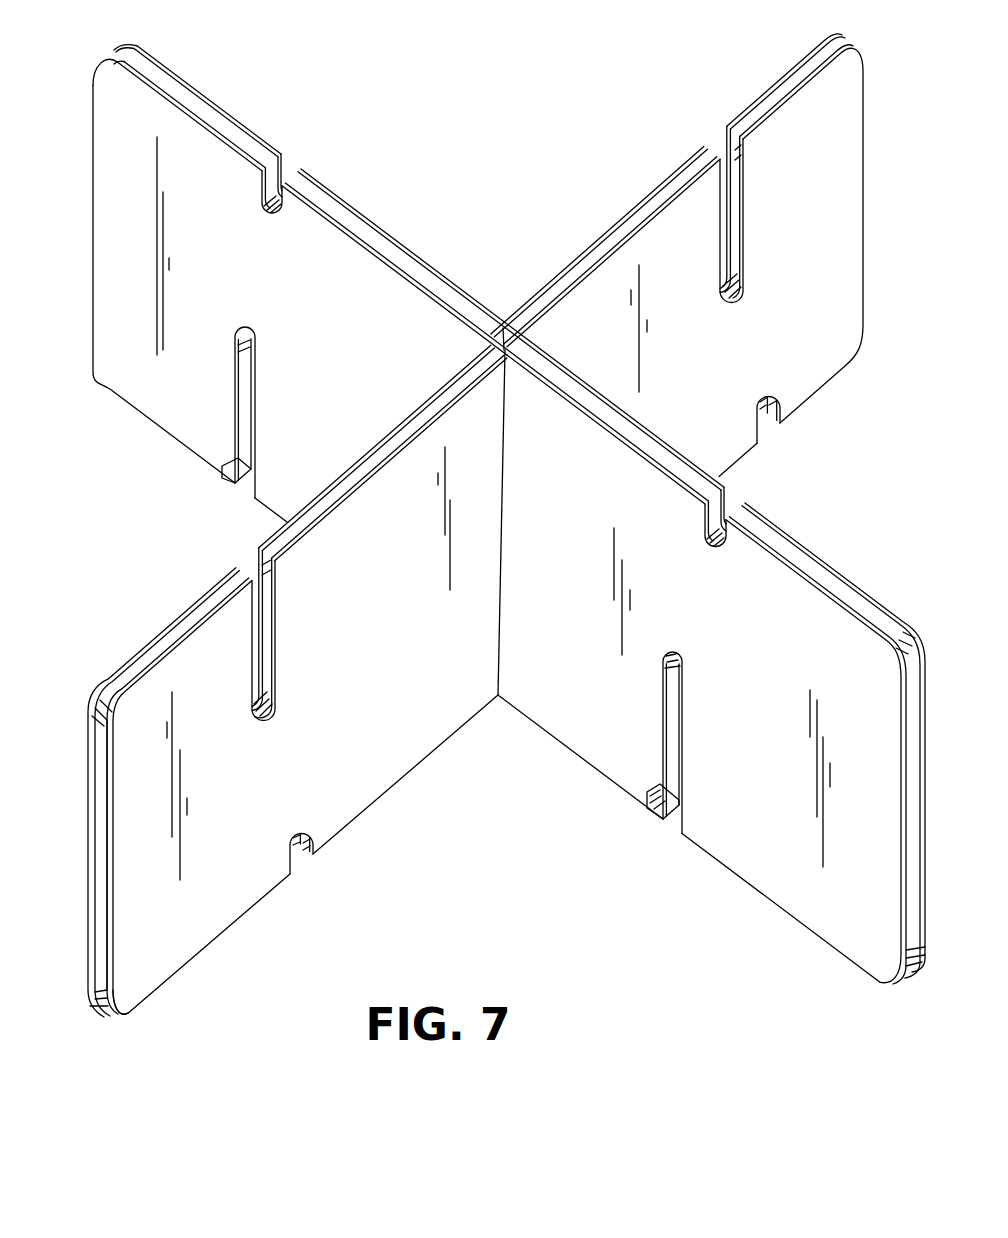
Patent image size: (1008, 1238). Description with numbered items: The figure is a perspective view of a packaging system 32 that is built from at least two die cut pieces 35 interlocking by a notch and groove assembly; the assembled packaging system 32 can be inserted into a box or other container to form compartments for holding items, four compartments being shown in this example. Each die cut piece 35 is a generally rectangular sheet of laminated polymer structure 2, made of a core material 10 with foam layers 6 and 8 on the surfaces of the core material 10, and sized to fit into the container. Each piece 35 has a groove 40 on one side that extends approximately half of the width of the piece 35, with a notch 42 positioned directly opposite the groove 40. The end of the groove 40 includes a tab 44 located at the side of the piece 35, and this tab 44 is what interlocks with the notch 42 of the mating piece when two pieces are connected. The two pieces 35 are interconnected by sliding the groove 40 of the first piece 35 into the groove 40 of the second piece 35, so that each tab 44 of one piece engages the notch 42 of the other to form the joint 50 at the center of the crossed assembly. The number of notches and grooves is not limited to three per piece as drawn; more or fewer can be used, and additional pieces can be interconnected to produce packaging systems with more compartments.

The laminated polymer structure 2 is at (480, 560).
The foam layer 6 is at (271, 715).
The foam layer 8 is at (90, 900).
The core material 10 is at (103, 982).
The packaging system 32 is at (449, 560).
The die cut piece 35 is at (509, 514).
The groove 40 is at (270, 620).
The notch 42 is at (298, 860).
The tab 44 is at (673, 808).
The joint 50 is at (500, 597).